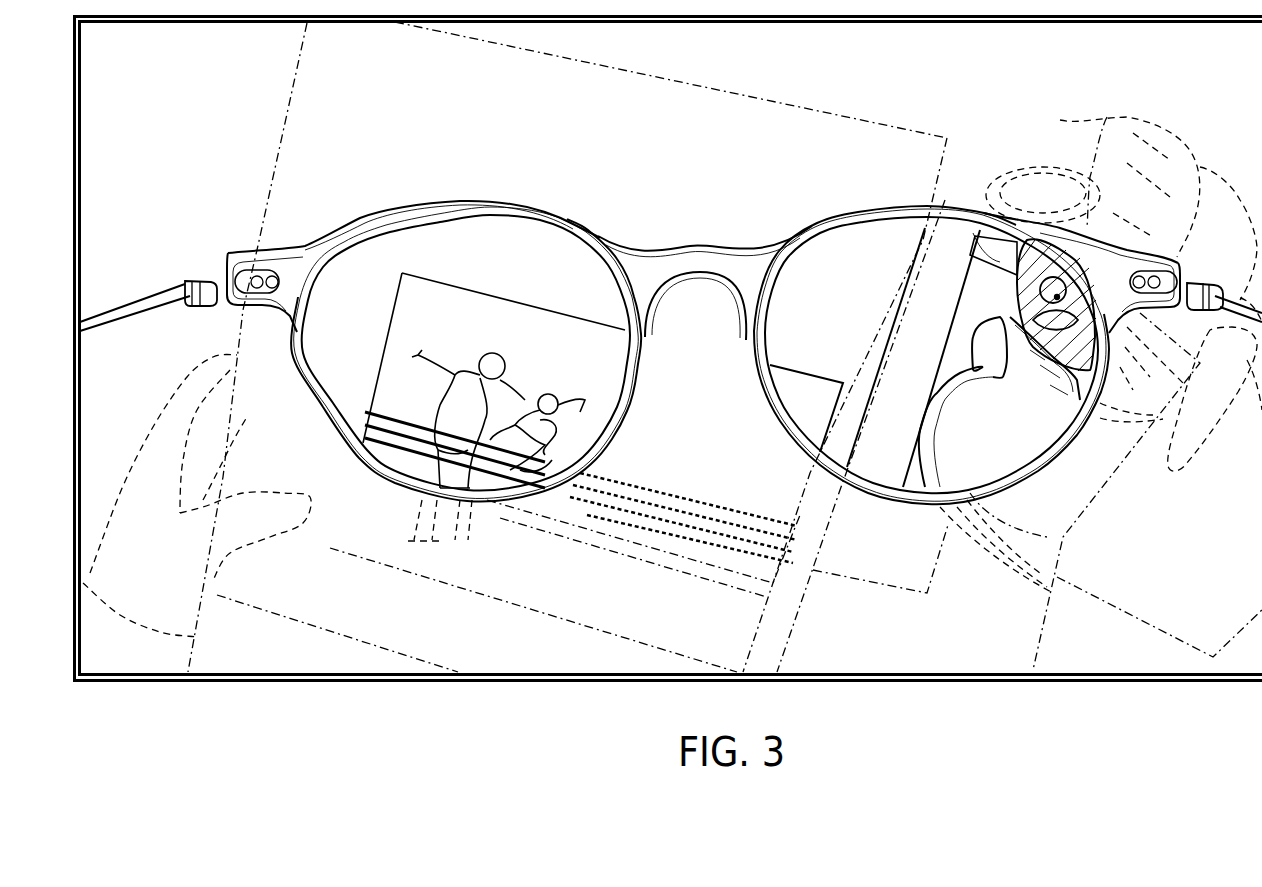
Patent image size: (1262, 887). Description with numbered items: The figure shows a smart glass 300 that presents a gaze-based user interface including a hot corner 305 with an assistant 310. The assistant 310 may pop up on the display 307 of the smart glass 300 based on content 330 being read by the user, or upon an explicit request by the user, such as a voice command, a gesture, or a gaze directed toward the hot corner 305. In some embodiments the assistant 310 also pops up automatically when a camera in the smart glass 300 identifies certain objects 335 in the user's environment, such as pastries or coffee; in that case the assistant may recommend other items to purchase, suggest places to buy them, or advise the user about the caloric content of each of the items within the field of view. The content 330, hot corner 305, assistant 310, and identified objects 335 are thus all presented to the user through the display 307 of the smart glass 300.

The smart glass 300 is at (279, 255).
The hot corner 305 is at (995, 258).
The display 307 is at (938, 432).
The assistant 310 is at (1068, 232).
The content 330 is at (482, 85).
The objects 335 is at (1046, 185).